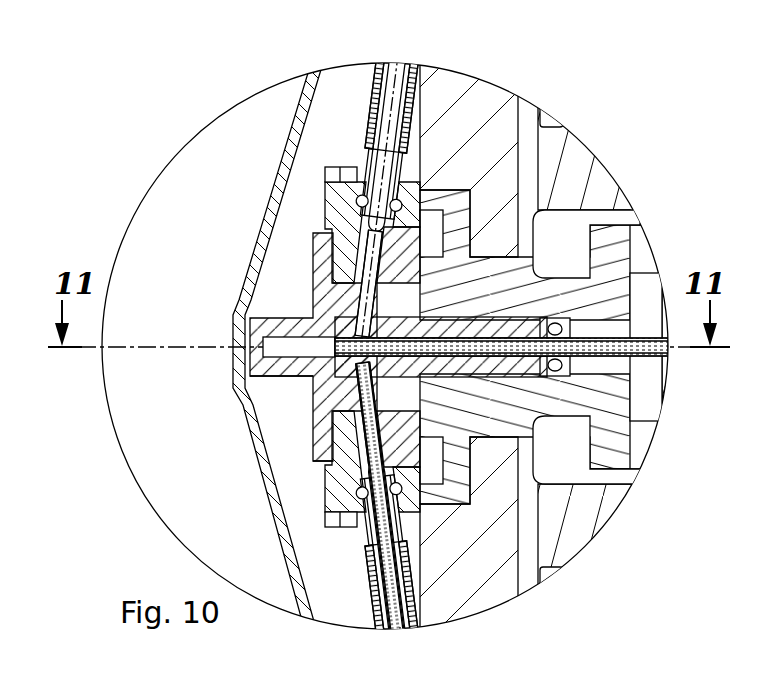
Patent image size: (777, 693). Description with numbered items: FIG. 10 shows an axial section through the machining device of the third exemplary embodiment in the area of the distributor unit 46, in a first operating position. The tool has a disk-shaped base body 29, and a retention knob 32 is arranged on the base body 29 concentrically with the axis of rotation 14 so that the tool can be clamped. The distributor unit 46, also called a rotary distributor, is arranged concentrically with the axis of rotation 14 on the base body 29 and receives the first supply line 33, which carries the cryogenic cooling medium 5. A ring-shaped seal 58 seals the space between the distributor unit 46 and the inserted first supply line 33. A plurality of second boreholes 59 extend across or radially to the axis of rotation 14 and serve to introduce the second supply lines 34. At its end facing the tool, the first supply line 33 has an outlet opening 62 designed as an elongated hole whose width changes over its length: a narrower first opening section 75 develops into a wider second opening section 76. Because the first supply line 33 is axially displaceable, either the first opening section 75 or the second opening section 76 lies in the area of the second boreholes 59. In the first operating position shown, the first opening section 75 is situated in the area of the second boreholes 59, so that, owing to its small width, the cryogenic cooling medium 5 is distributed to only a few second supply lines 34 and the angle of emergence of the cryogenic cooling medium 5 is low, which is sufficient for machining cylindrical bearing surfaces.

The cryogenic cooling medium 5 is at (668, 350).
The axis of rotation 14 is at (208, 348).
The base body 29 is at (463, 95).
The retention knob 32 is at (622, 413).
The first supply line 33 is at (659, 329).
The second supply lines 34 is at (371, 340).
The distributor unit 46 is at (330, 287).
The ring-shaped seal 58 is at (604, 332).
The second boreholes 59 is at (316, 382).
The outlet opening 62 is at (360, 318).
The first opening section 75 is at (304, 509).
The second opening section 76 is at (450, 350).